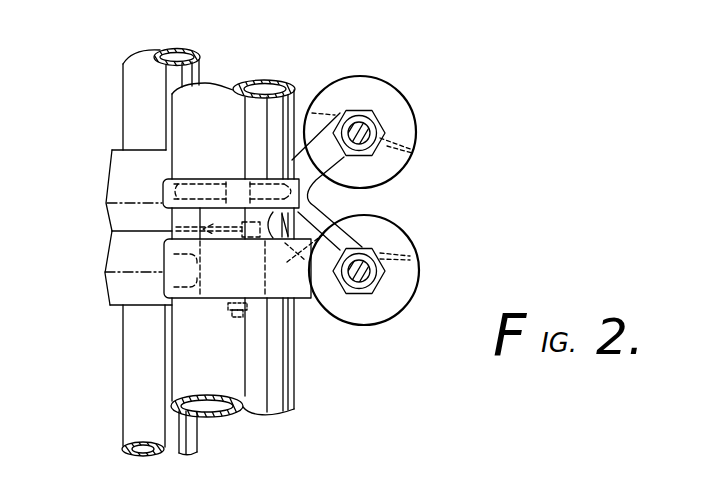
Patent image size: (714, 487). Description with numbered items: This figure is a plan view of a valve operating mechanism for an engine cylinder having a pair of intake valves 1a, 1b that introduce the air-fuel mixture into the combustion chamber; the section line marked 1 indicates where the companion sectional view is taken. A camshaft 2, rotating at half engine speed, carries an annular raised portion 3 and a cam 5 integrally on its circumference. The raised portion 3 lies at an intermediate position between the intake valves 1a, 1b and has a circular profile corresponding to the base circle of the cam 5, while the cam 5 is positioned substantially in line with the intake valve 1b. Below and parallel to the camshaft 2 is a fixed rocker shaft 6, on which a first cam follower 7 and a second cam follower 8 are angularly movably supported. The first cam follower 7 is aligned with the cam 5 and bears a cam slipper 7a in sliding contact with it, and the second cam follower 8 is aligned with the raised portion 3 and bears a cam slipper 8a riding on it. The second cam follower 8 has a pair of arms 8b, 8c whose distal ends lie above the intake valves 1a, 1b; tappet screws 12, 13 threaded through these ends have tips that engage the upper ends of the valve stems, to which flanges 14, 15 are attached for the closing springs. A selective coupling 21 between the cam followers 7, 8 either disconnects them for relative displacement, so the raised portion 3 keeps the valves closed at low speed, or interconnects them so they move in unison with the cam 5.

The section line 1- 1 is at (62, 358).
The intake valve 1a is at (402, 80).
The intake valve 1b is at (410, 323).
The camshaft 2 is at (258, 80).
The annular raised portion 3 is at (216, 186).
The cam 5 is at (192, 299).
The rocker shaft 6 is at (122, 385).
The first cam follower 7 is at (110, 255).
The cam slipper 7a is at (221, 283).
The second cam follower 8 is at (112, 177).
The cam slipper 8a is at (233, 180).
The arm 8b is at (318, 137).
The arm 8c is at (330, 283).
The tappet screw 12 is at (357, 128).
The tappet screw 13 is at (358, 280).
The flange 14 is at (410, 150).
The flange 15 is at (402, 244).
The selective coupling 21 is at (237, 320).